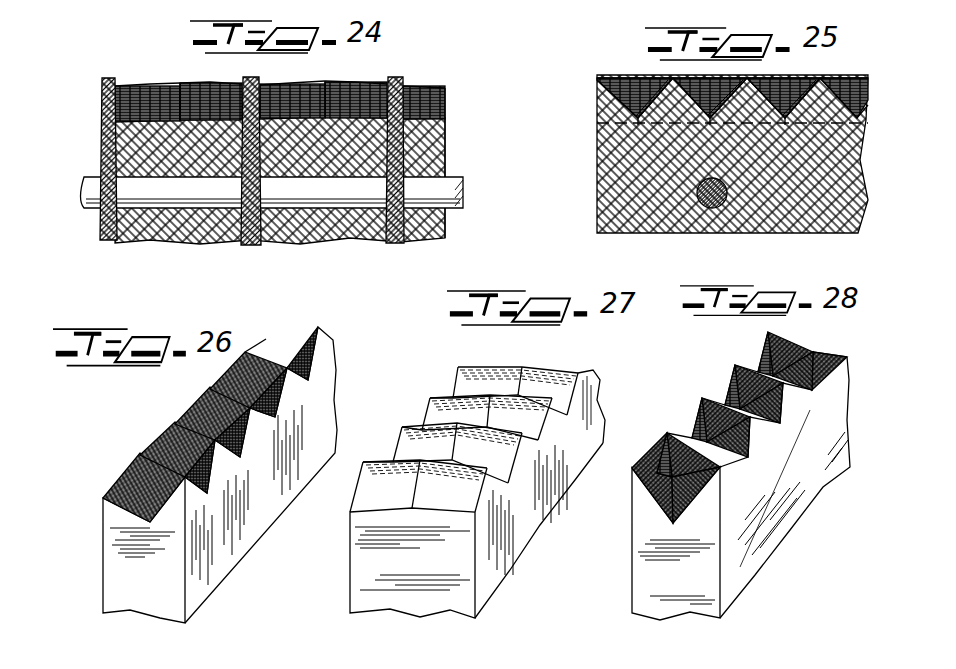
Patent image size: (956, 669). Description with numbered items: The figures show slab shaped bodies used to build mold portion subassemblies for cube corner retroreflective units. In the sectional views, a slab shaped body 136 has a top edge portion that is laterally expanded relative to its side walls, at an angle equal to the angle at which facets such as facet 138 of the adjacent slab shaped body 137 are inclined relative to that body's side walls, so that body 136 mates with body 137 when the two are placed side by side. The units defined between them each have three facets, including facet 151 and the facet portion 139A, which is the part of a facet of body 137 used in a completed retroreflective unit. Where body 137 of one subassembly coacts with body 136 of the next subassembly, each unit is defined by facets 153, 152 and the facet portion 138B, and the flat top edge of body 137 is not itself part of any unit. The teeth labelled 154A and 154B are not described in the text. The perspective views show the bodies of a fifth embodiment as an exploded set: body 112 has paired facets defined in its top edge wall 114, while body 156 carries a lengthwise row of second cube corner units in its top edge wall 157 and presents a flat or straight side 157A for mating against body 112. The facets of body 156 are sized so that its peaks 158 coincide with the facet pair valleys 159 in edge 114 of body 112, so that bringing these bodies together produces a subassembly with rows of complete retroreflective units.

In FIG. 24, the slab shaped body 136 is at (117, 128).
In FIG. 24, the slab shaped body 137 is at (109, 72).
In FIG. 24, the facet 151 is at (193, 96).
In FIG. 24, the facet portion 139A is at (240, 94).
In FIG. 24, the facet portion 138B is at (268, 88).
In FIG. 25, the facet portion 138B is at (630, 74).
In FIG. 24, the facet 153 is at (305, 90).
In FIG. 25, the facet 153 is at (660, 76).
In FIG. 25, the facet 138 is at (770, 76).
In FIG. 25, the facet 152 is at (614, 78).
In FIG. 25, the tooth 154A is at (628, 3).
In FIG. 25, the tooth 154B is at (768, 3).
In FIG. 26, the body 156 is at (112, 528).
In FIG. 28, the body 156 is at (803, 482).
In FIG. 26, the top edge wall 157 is at (360, 336).
In FIG. 28, the top edge wall 157 is at (763, 325).
In FIG. 26, the flat or straight side 157A is at (337, 360).
In FIG. 26, the peaks 158 is at (313, 333).
In FIG. 28, the peaks 158 is at (766, 336).
In FIG. 27, the top edge wall 114 is at (620, 364).
In FIG. 27, the body 112 is at (532, 514).
In FIG. 27, the valleys 159 is at (533, 443).